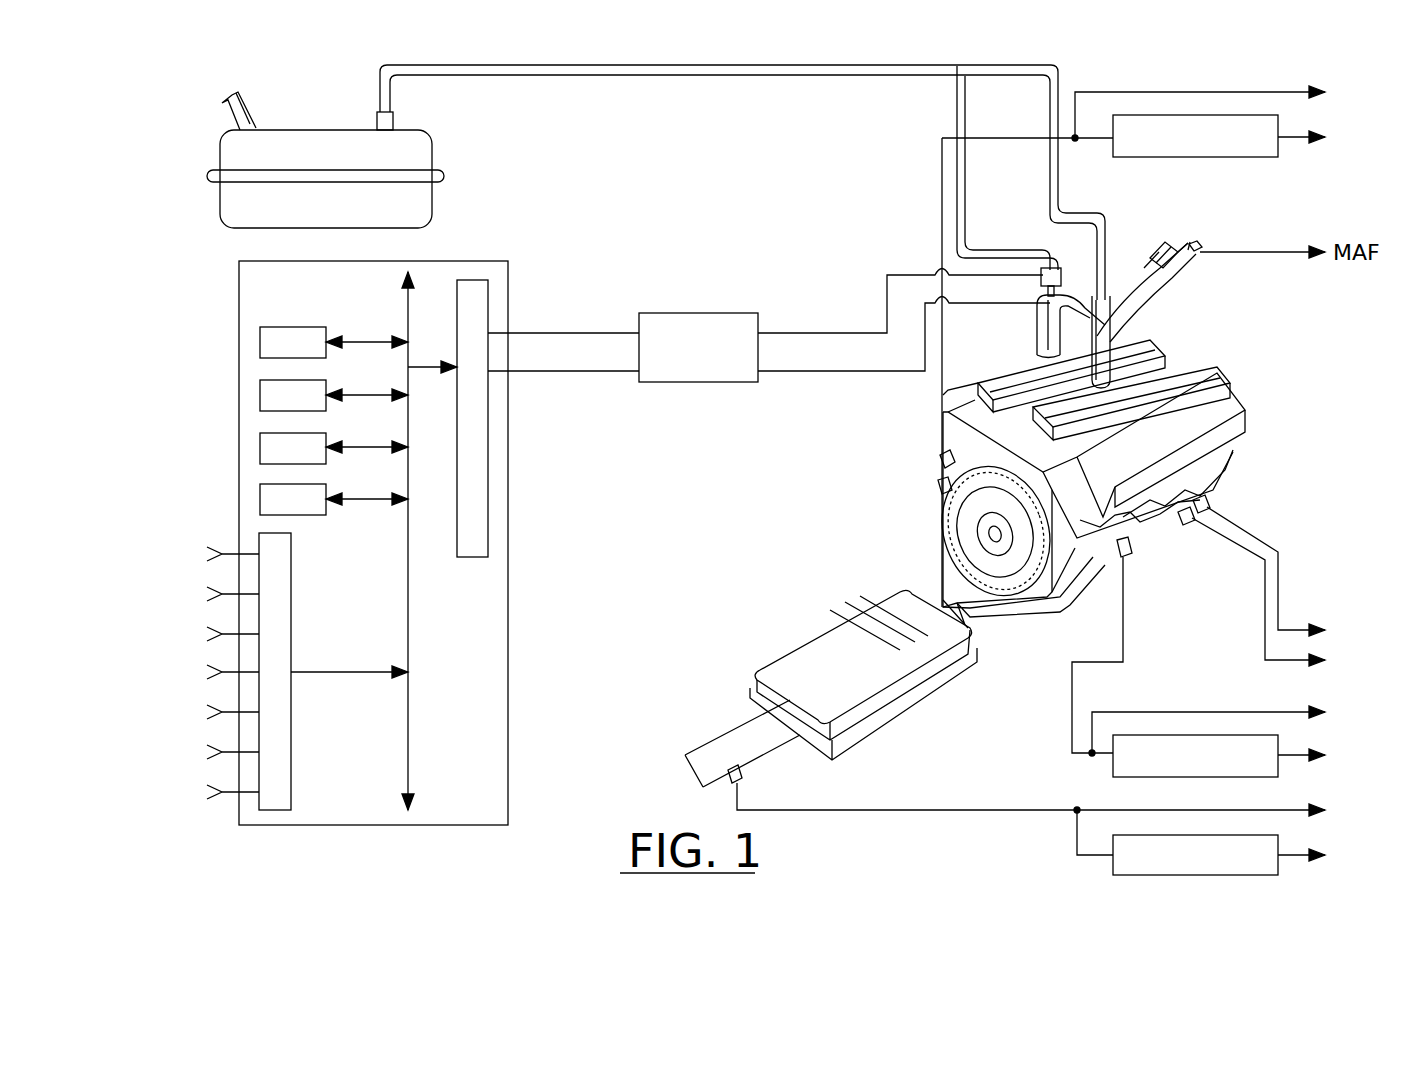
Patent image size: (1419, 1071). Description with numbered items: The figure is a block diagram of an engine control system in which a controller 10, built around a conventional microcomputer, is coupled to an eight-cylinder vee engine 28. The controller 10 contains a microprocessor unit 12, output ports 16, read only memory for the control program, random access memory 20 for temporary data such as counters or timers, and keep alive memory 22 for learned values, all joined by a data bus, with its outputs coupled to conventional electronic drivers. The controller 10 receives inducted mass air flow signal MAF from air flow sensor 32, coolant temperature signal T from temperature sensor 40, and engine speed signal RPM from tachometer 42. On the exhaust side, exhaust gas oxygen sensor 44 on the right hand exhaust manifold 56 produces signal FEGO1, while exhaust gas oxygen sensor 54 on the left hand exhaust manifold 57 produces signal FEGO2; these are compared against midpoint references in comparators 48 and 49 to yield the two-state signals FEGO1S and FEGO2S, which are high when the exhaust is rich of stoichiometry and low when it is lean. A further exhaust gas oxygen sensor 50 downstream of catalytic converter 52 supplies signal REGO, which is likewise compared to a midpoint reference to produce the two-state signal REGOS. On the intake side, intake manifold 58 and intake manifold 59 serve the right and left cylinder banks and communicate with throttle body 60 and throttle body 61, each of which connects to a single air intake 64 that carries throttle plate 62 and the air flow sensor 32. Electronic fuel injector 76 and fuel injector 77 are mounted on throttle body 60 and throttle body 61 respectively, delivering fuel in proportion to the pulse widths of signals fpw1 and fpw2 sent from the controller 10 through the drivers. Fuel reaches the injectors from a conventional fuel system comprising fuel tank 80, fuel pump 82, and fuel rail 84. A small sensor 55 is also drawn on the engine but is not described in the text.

The controller 10 is at (228, 294).
The microprocessor unit 12 is at (259, 342).
The output ports 16 is at (485, 278).
The random access memory 20 is at (259, 447).
The keep alive memory 22 is at (259, 499).
The engine 28 is at (1314, 410).
The air flow sensor 32 is at (1202, 250).
The temperature sensor 40 is at (1210, 503).
The tachometer 42 is at (1192, 525).
The exhaust gas oxygen sensor 44 is at (1132, 552).
The comparator 48 is at (1113, 777).
The comparator 49 is at (1185, 160).
The exhaust gas oxygen sensor 50 is at (812, 645).
The catalytic converter 52 is at (745, 775).
The exhaust gas oxygen sensor 54 is at (1113, 872).
The sensor 55 is at (940, 462).
The right hand exhaust manifold 56 is at (1232, 462).
The left hand exhaust manifold 57 is at (938, 487).
The intake manifold 58 is at (1180, 372).
The intake manifold 59 is at (942, 380).
The throttle body 60 is at (1140, 352).
The throttle body 61 is at (1037, 325).
The throttle plate 62 is at (1160, 242).
The air intake 64 is at (1188, 243).
The fuel injector 76 is at (1110, 290).
The fuel injector 77 is at (1050, 262).
The fuel tank 80 is at (320, 130).
The fuel pump 82 is at (395, 118).
The fuel rail 84 is at (660, 80).